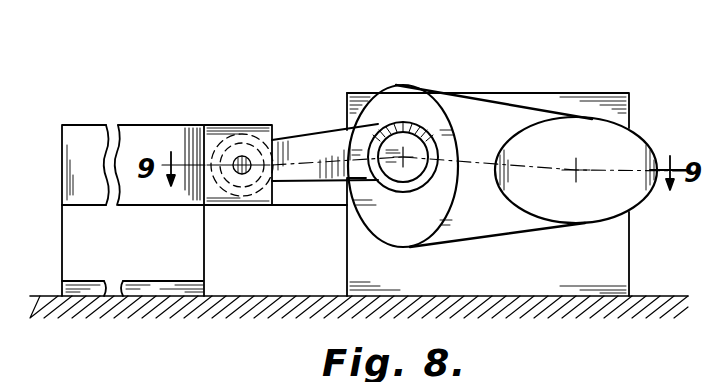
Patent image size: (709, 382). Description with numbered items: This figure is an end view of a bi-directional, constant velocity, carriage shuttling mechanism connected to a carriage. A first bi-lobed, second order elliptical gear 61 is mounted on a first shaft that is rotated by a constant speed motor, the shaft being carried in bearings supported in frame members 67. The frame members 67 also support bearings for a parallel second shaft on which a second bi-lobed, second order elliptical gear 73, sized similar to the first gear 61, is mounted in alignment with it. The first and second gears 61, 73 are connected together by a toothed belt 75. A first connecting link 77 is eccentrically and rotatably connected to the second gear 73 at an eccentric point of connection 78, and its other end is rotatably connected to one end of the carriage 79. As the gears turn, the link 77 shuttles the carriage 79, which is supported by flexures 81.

The first bi-lobed, second order elliptical gear 61 is at (630, 152).
The frame members 67 is at (630, 258).
The second bi-lobed, second order elliptical gear 73 is at (428, 100).
The toothed belt 75 is at (489, 240).
The first connecting link 77 is at (307, 137).
The eccentric point of connection 78 is at (405, 122).
The carriage 79 is at (163, 133).
The flexures 81 is at (66, 244).